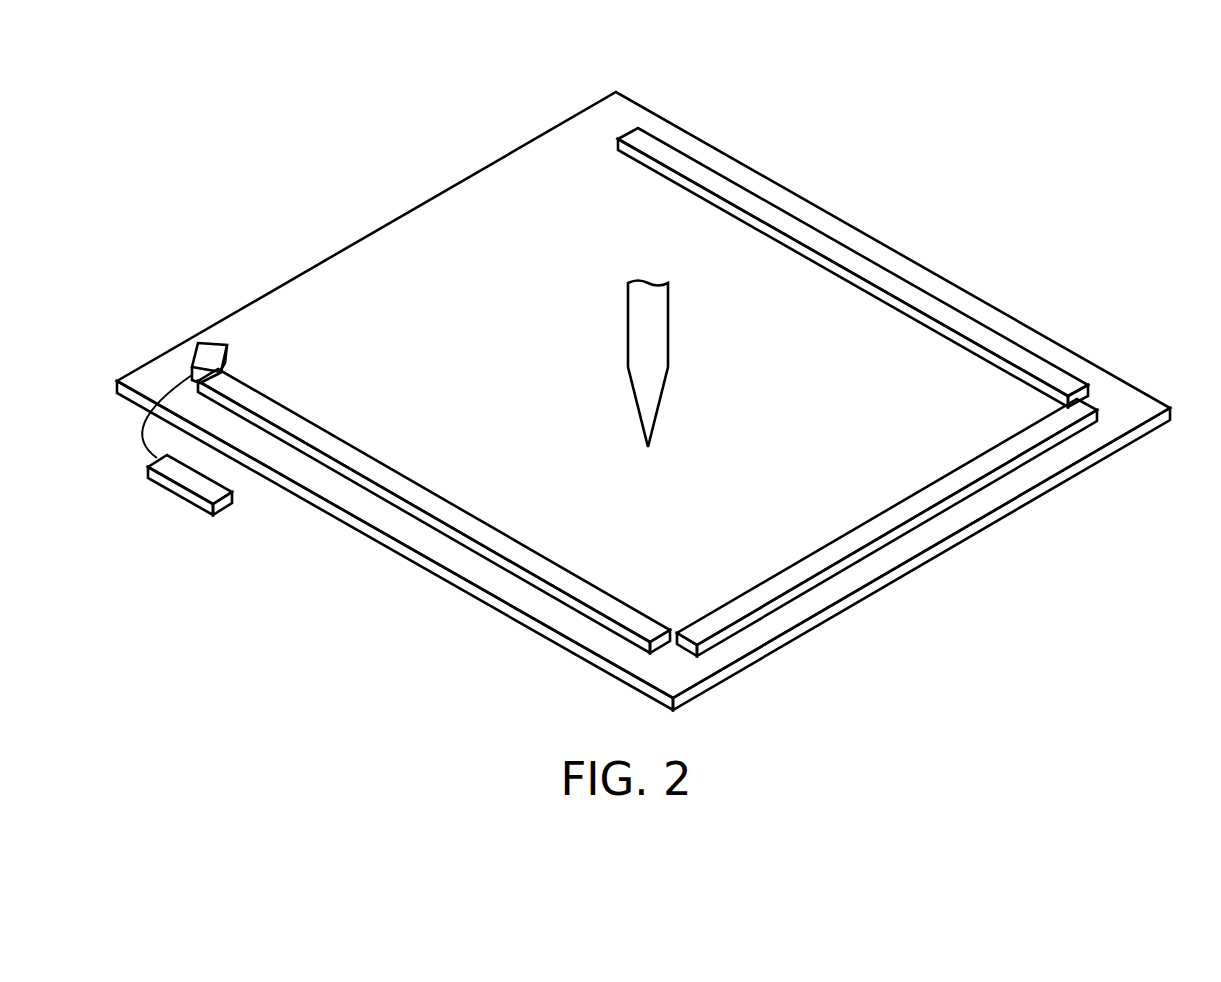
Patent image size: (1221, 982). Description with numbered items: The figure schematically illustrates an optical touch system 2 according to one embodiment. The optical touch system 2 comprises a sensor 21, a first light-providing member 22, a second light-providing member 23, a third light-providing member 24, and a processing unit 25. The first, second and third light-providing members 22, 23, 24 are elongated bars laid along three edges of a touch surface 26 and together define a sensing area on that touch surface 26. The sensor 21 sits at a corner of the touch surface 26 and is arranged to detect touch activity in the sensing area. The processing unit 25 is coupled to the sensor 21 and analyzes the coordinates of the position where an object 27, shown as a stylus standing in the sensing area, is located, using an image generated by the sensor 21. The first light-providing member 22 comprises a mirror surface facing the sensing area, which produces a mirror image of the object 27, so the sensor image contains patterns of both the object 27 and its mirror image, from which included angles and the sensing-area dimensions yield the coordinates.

The optical touch system 2 is at (161, 100).
The sensor 21 is at (210, 349).
The first light-providing member 22 is at (656, 146).
The second light-providing member 23 is at (883, 523).
The third light-providing member 24 is at (415, 495).
The processing unit 25 is at (180, 492).
The touch surface 26 is at (1128, 398).
The object 27 is at (649, 286).